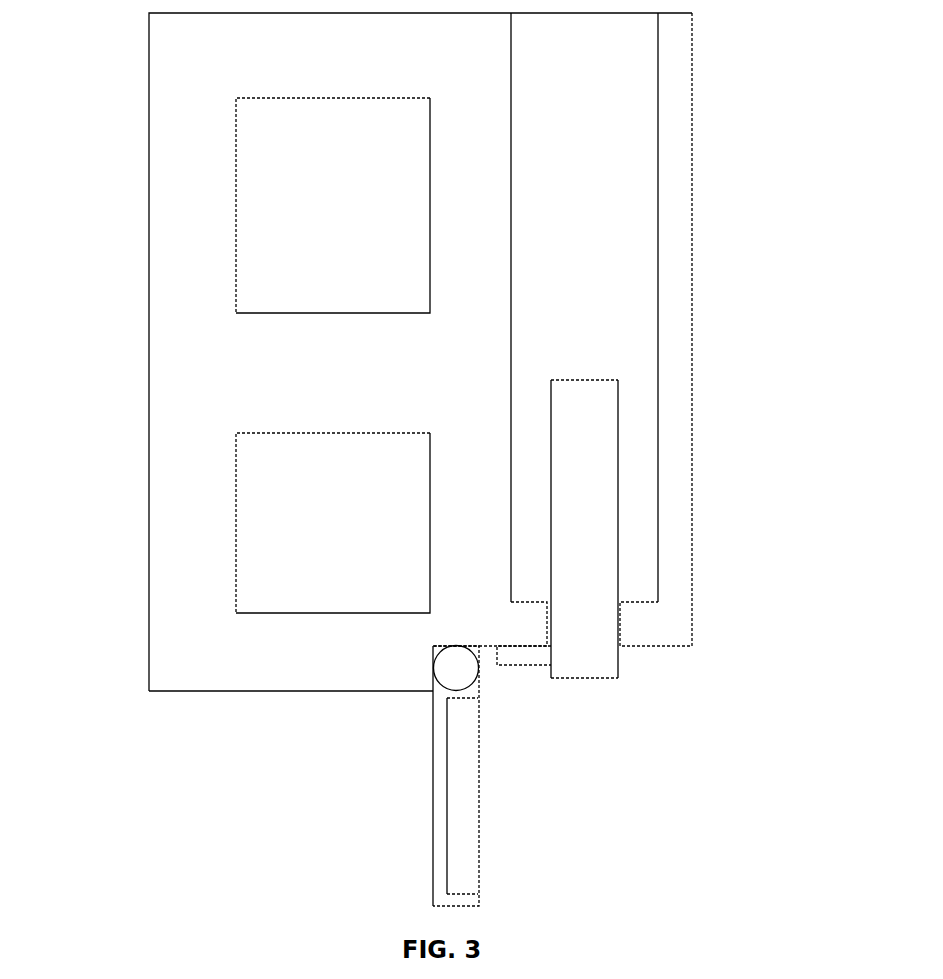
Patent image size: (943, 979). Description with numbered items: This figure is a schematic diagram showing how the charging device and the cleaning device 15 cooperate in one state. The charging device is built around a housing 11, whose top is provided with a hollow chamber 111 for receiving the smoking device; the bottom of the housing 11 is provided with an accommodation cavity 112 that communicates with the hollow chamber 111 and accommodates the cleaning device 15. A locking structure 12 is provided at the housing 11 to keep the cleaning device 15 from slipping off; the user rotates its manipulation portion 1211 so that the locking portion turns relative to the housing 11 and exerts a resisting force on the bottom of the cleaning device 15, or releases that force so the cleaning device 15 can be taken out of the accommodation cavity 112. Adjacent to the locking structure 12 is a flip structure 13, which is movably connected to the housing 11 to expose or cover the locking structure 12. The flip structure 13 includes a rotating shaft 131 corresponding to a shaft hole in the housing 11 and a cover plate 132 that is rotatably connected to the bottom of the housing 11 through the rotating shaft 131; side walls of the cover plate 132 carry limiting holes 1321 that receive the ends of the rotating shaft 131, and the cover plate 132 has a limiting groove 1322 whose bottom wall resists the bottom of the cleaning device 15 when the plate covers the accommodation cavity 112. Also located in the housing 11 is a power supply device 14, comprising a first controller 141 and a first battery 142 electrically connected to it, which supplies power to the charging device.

The housing 11 is at (501, 352).
The hollow chamber 111 is at (610, 277).
The accommodation cavity 112 is at (620, 627).
The locking structure 12 is at (662, 708).
The manipulation portion 1211 is at (531, 656).
The flip structure 13 is at (428, 778).
The rotating shaft 131 is at (447, 670).
The cover plate 132 is at (435, 776).
The limiting hole 1321 is at (453, 690).
The limiting groove 1322 is at (473, 822).
The power supply device 14 is at (226, 355).
The first controller 141 is at (263, 557).
The first battery 142 is at (267, 246).
The cleaning device 15 is at (600, 533).